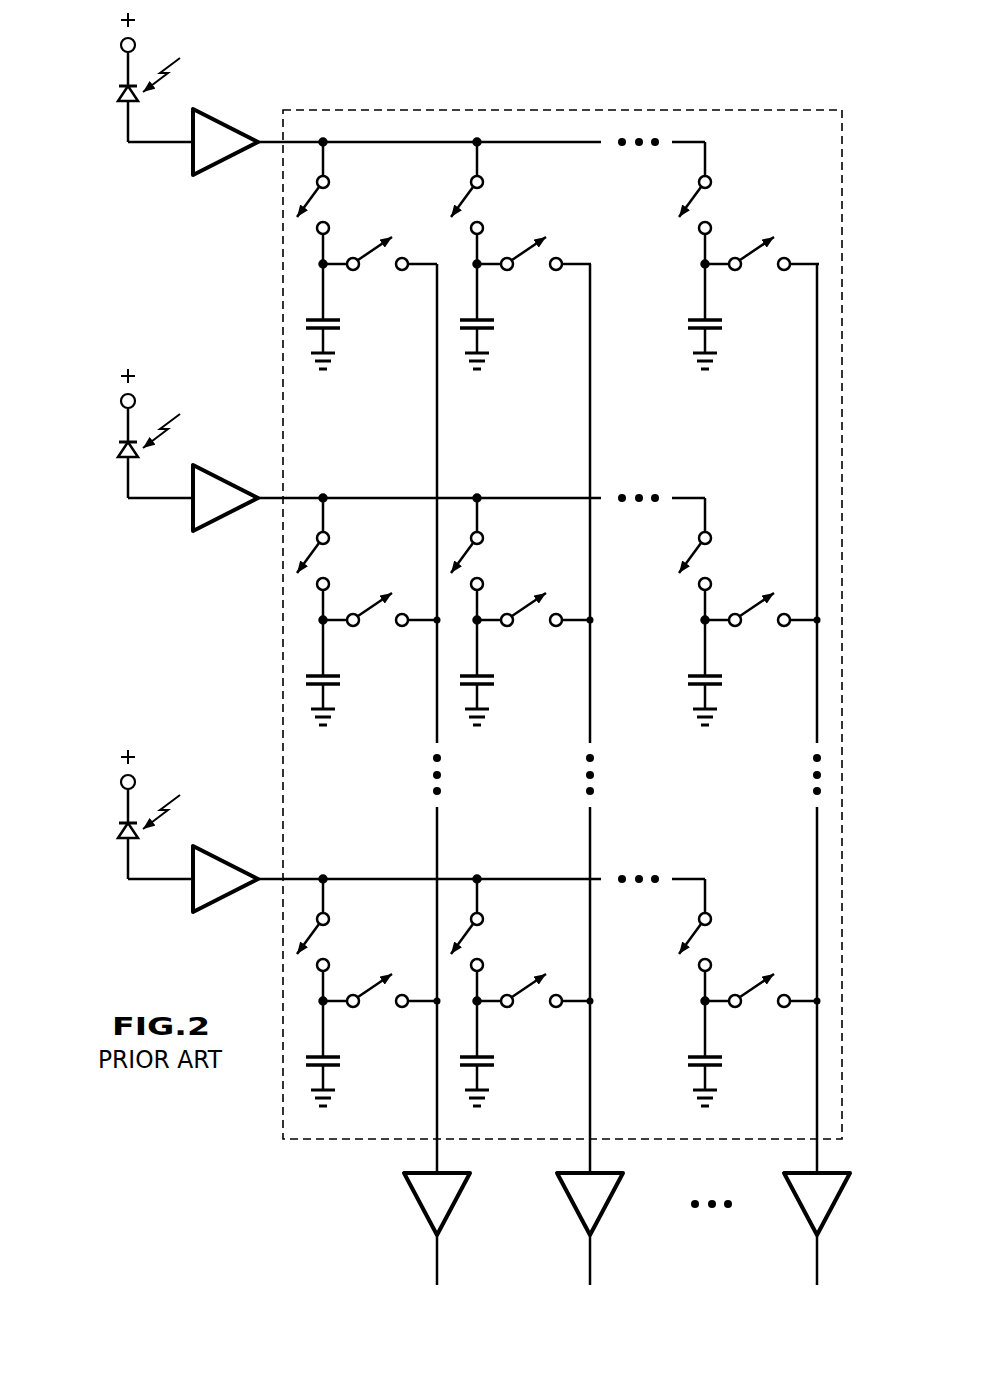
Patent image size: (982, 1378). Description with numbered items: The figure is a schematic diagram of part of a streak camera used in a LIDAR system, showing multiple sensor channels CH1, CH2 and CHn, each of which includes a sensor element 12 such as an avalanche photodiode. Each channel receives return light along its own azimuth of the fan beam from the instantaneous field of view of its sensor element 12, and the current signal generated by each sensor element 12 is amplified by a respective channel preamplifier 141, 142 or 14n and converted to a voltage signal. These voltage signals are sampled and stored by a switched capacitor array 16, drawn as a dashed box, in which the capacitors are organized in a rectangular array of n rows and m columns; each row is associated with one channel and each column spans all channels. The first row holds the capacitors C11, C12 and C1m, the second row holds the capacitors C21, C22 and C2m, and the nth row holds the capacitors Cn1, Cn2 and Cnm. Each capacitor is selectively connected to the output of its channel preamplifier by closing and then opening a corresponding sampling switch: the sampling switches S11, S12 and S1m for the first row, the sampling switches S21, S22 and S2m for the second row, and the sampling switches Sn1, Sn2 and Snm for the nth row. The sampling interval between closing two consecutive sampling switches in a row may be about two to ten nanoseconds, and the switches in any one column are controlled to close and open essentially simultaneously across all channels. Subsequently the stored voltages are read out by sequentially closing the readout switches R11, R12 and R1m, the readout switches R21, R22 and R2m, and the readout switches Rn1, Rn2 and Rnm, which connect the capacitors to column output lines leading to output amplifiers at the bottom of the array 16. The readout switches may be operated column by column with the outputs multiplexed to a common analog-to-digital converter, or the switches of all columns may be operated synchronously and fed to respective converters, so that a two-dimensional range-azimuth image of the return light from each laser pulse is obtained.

The sensor element 12 is at (119, 88).
The channel preamplifier 141 is at (228, 125).
The channel preamplifier 142 is at (228, 481).
The channel preamplifier 14n is at (228, 862).
The switched capacitor array 16 is at (796, 108).
The sensor channel CH1 is at (353, 95).
The sensor channel CH2 is at (355, 467).
The sensor channel CHn is at (355, 848).
The sampling switch S11 is at (327, 205).
The sampling switch S12 is at (481, 205).
The sampling switch S1m is at (714, 205).
The sampling switch S21 is at (327, 561).
The sampling switch S22 is at (481, 561).
The sampling switch S2m is at (714, 561).
The sampling switch Sn1 is at (327, 942).
The sampling switch Sn2 is at (481, 942).
The sampling switch Snm is at (714, 942).
The readout switch R11 is at (380, 270).
The readout switch R12 is at (534, 270).
The readout switch R1m is at (762, 270).
The readout switch R21 is at (380, 626).
The readout switch R22 is at (534, 626).
The readout switch R2m is at (762, 626).
The readout switch Rn1 is at (380, 1007).
The readout switch Rn2 is at (534, 1007).
The readout switch Rnm is at (762, 1007).
The capacitor C11 is at (342, 316).
The capacitor C12 is at (496, 316).
The capacitor C1m is at (729, 316).
The capacitor C21 is at (342, 672).
The capacitor C22 is at (496, 672).
The capacitor C2m is at (729, 672).
The capacitor Cn1 is at (342, 1053).
The capacitor Cn2 is at (496, 1053).
The capacitor Cnm is at (729, 1053).